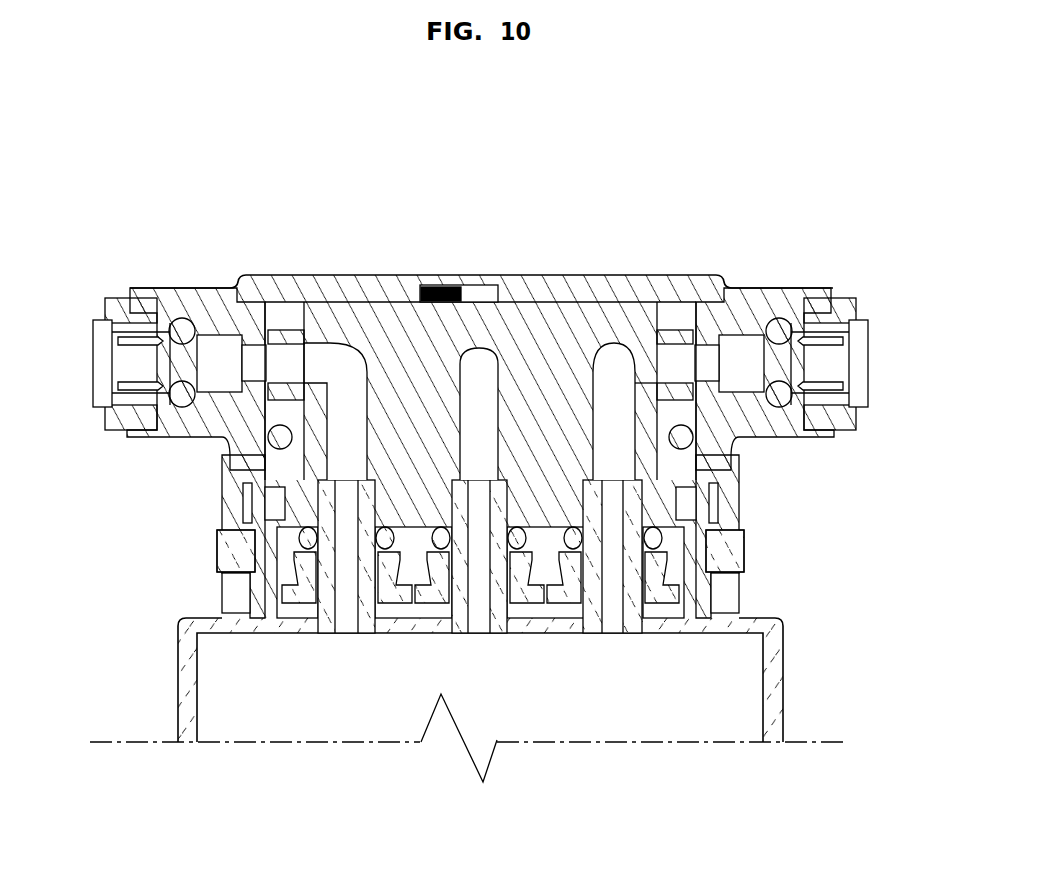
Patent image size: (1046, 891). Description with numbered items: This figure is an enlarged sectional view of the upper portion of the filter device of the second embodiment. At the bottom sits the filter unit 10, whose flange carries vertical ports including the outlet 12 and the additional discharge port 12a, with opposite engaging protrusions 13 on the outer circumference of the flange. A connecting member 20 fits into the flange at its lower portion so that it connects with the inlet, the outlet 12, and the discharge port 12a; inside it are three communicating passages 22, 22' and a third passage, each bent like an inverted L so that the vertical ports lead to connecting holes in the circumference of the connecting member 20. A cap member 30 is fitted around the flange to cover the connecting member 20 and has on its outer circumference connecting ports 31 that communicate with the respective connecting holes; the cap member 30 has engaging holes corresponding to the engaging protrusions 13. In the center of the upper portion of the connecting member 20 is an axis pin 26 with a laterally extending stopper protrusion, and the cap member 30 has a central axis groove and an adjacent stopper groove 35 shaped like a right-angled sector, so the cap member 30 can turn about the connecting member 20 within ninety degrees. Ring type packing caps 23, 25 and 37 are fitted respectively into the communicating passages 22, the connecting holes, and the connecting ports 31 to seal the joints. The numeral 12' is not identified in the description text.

The filter unit 10 is at (160, 662).
The outlet 12 is at (364, 518).
The shaft 12' is at (475, 662).
The discharge port 12a is at (610, 597).
The engaging protrusion 13 is at (220, 548).
The connecting member 20 is at (250, 464).
The communicating passage 22 is at (480, 336).
The communicating passage 22' is at (518, 336).
The ring type packing cap 23 is at (430, 598).
The ring type packing cap 25 is at (281, 330).
The axis pin 26 is at (483, 296).
The cap member 30 is at (583, 258).
The connecting port 31 is at (192, 290).
The stopper groove 35 is at (450, 296).
The ring type packing cap 37 is at (118, 296).